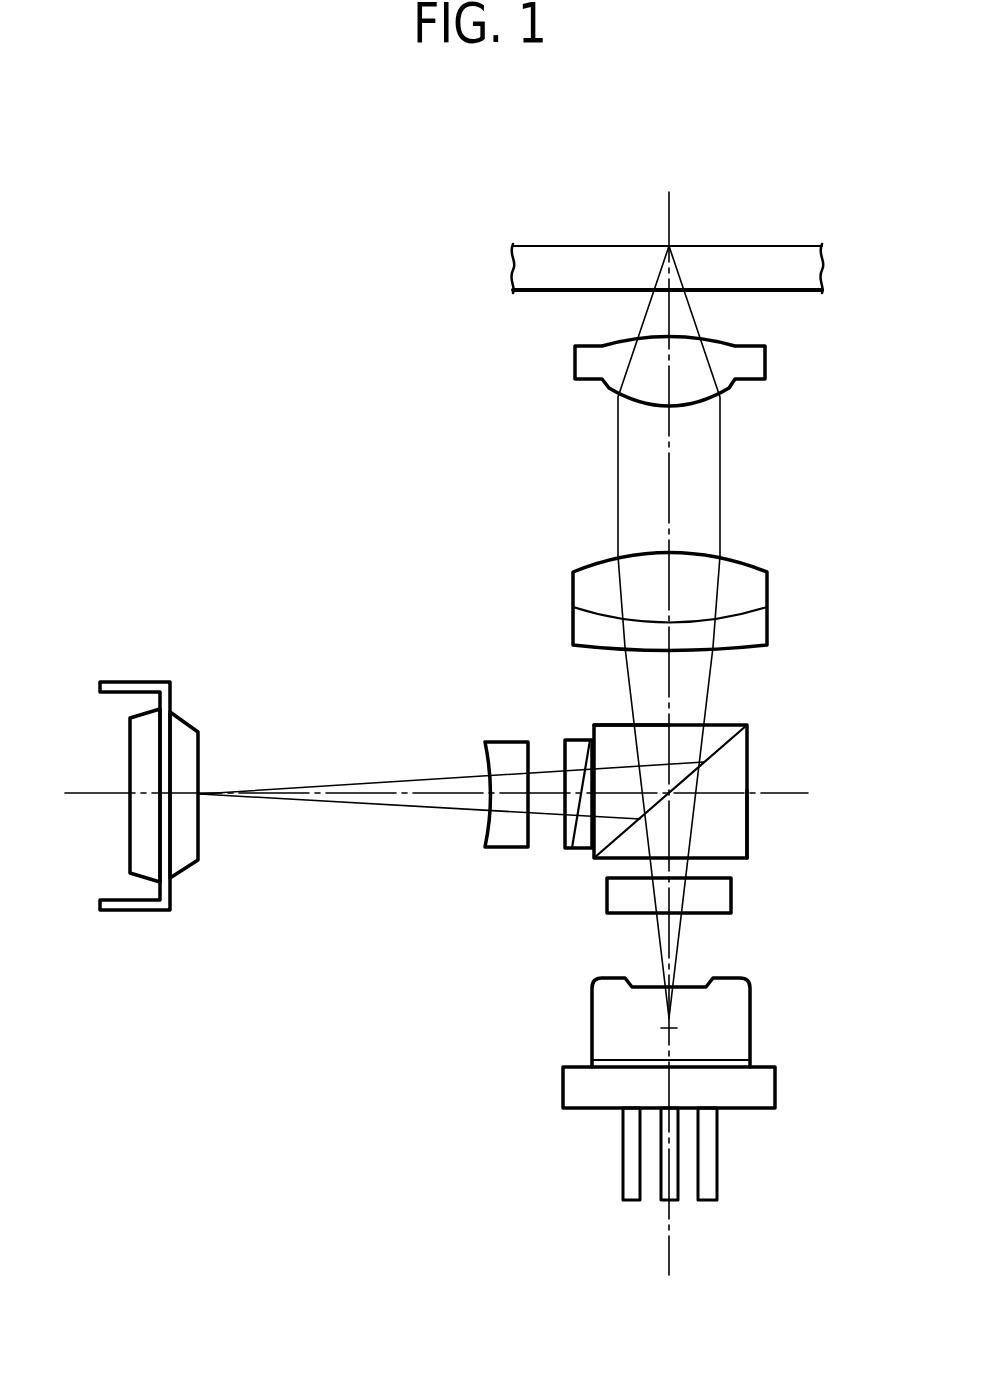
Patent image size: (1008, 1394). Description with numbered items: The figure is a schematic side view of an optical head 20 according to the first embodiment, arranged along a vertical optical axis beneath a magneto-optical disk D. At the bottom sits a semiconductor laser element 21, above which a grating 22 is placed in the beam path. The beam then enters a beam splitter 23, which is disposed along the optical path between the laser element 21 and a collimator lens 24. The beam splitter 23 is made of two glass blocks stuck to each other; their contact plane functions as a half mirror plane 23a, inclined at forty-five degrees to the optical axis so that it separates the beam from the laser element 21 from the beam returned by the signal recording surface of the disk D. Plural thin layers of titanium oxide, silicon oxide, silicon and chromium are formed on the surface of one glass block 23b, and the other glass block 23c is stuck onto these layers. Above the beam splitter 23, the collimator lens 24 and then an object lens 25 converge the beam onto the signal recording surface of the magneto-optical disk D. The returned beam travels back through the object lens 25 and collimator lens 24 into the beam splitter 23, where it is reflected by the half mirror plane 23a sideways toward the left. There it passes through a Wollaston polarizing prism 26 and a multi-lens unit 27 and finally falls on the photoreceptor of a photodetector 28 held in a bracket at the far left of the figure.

The optical head 20 is at (275, 318).
The magneto-optical disk D is at (777, 258).
The semiconductor laser element 21 is at (751, 1020).
The grating 22 is at (732, 890).
The beam splitter 23 is at (749, 770).
The half mirror plane 23a is at (722, 738).
The glass block 23b is at (749, 845).
The glass block 23c is at (605, 727).
The collimator lens 24 is at (768, 567).
The object lens 25 is at (767, 352).
The Wollaston polarizing prism 26 is at (575, 740).
The multi-lens unit 27 is at (503, 850).
The photodetector 28 is at (187, 867).